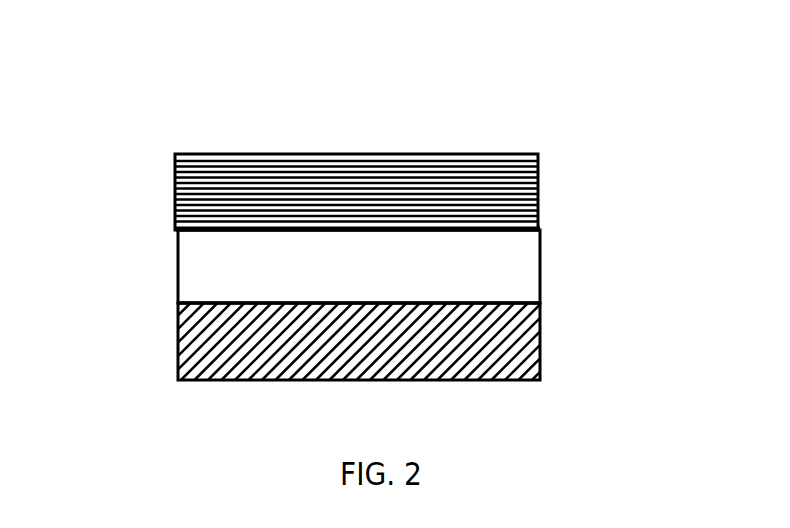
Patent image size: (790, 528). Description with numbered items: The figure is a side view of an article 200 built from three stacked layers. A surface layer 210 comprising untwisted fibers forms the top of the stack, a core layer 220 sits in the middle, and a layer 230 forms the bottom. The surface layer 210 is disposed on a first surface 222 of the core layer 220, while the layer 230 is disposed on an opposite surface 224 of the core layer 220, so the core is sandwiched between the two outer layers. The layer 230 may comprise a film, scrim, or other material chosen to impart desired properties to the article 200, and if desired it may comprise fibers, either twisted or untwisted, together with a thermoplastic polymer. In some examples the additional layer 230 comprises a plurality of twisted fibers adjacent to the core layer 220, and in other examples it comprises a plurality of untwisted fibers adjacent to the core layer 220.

The article 200 is at (224, 97).
The surface layer 210 is at (500, 192).
The core layer 220 is at (500, 269).
The first surface 222 is at (437, 232).
The opposite surface 224 is at (197, 304).
The layer 230 is at (520, 344).